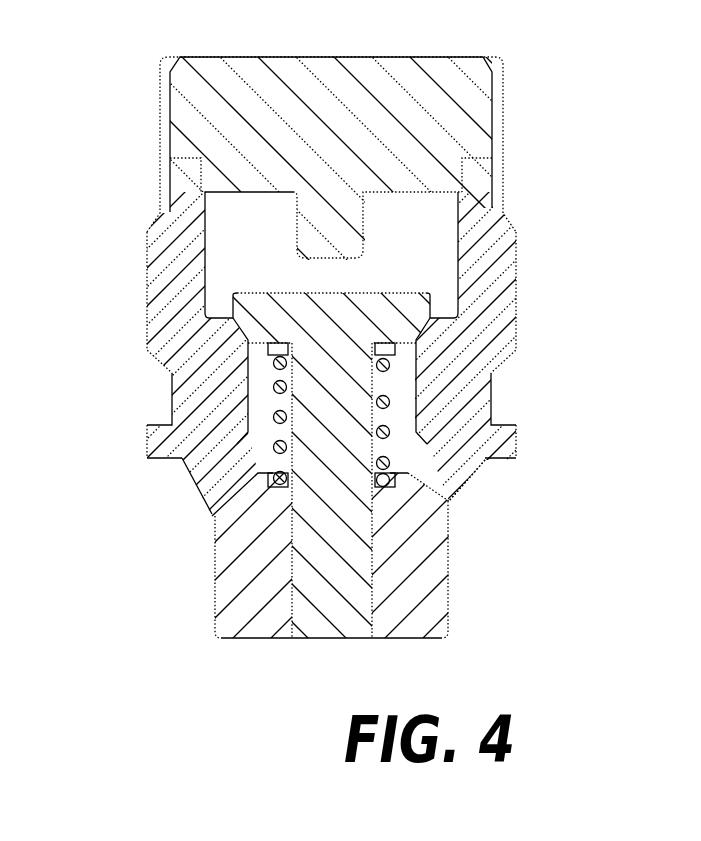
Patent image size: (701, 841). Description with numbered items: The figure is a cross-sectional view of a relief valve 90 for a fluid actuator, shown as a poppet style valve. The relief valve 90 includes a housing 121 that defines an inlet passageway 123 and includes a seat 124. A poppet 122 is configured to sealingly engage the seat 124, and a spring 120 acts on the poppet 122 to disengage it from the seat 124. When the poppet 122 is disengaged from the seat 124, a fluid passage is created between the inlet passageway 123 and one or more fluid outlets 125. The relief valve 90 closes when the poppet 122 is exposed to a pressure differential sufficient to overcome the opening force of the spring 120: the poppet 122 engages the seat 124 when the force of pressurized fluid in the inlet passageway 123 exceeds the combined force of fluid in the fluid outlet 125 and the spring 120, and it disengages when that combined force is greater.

The relief valve 90 is at (527, 80).
The spring 120 is at (377, 400).
The housing 121 is at (176, 334).
The poppet 122 is at (333, 620).
The inlet passageway 123 is at (237, 247).
The seat 124 is at (421, 336).
The fluid outlet 125 is at (502, 513).